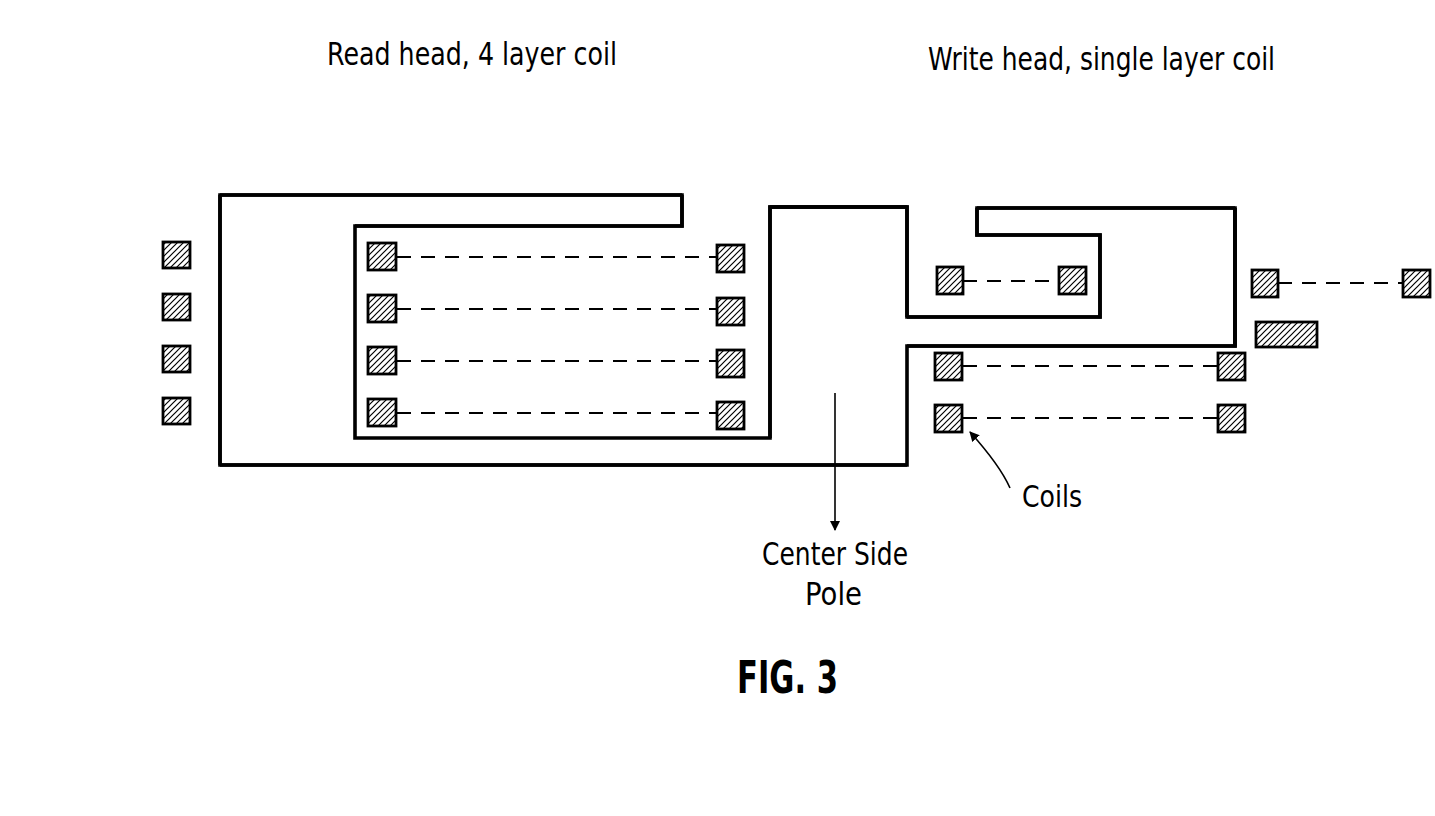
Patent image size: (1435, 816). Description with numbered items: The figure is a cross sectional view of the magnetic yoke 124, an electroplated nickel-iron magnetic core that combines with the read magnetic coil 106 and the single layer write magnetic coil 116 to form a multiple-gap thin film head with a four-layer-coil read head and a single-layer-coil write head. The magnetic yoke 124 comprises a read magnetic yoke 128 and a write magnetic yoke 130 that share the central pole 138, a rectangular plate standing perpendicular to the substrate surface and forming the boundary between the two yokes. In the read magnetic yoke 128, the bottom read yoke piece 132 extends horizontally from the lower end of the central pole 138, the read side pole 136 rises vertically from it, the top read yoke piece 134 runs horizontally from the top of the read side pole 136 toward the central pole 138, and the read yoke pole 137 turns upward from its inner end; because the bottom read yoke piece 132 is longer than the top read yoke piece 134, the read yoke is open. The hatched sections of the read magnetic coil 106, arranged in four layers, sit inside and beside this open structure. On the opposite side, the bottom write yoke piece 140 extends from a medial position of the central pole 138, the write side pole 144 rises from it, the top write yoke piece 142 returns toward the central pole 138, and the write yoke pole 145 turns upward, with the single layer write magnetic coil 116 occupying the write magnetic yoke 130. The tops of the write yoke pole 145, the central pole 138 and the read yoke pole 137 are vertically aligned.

The read magnetic coil 106 is at (735, 245).
The single layer write magnetic coil 116 is at (1282, 268).
The magnetic yoke 124 is at (793, 207).
The read magnetic yoke 128 is at (267, 465).
The write magnetic yoke 130 is at (1215, 208).
The bottom read yoke piece 132 is at (490, 465).
The top read yoke piece 134 is at (448, 195).
The read side pole 136 is at (217, 213).
The read yoke pole 137 is at (667, 197).
The central pole 138 is at (825, 207).
The bottom write yoke piece 140 is at (1238, 348).
The top write yoke piece 142 is at (1073, 208).
The write side pole 144 is at (1237, 231).
The write yoke pole 145 is at (978, 208).